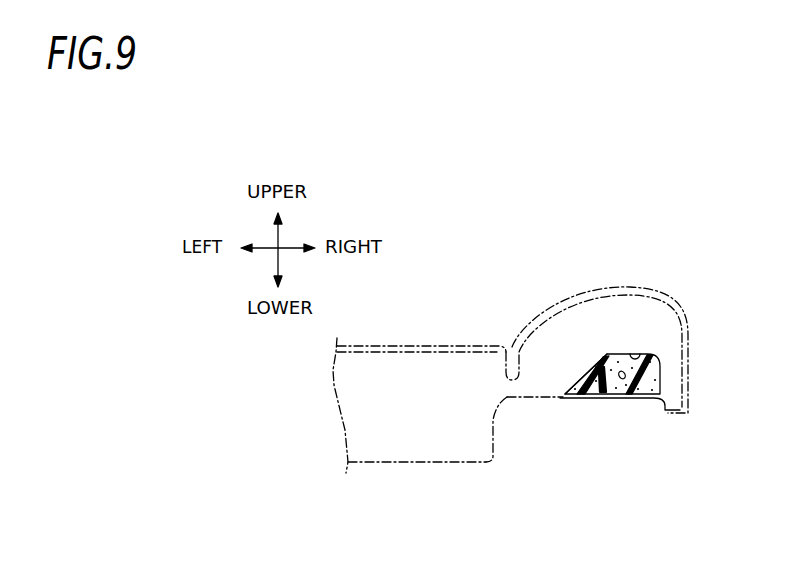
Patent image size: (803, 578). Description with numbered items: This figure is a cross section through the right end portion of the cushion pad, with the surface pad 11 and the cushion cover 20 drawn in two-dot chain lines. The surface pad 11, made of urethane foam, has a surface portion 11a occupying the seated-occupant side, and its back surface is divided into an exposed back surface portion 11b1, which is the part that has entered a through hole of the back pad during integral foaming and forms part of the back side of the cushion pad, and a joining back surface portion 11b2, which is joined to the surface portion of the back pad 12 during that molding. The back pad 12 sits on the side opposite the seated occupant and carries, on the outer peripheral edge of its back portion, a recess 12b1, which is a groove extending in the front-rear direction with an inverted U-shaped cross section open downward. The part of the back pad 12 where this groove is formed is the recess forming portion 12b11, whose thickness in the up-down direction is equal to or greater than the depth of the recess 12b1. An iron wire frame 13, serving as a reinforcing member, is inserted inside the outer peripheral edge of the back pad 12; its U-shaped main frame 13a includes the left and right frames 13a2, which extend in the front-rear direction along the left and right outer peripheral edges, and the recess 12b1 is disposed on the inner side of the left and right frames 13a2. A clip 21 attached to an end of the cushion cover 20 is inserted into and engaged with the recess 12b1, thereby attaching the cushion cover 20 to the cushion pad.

The surface pad 11 is at (481, 392).
The surface portion 11a is at (447, 348).
The exposed back surface portion 11b1 is at (403, 462).
The joining back surface portion 11b2 is at (647, 354).
The back pad 12 is at (660, 368).
The recess 12b1 is at (573, 385).
The recess forming portion 12b11 is at (603, 392).
The frame 13 is at (635, 337).
The main frame 13a is at (635, 337).
The left and right frames 13a2 is at (635, 337).
The cushion cover 20 is at (382, 346).
The clip 21 is at (613, 388).